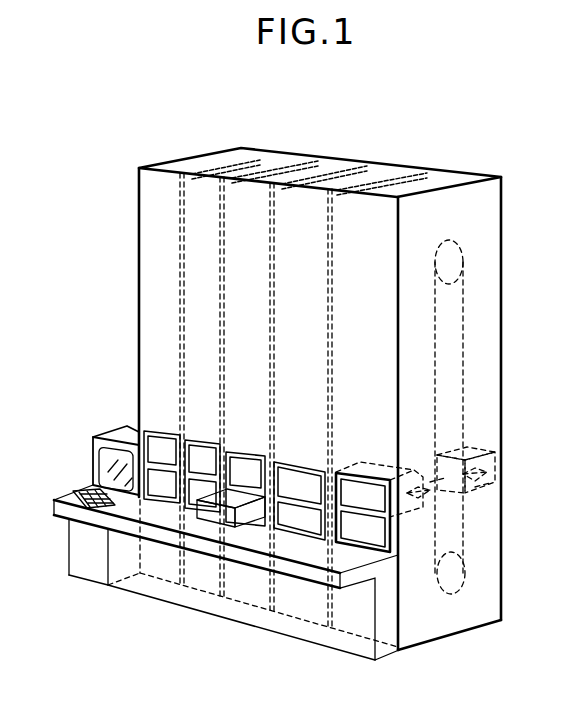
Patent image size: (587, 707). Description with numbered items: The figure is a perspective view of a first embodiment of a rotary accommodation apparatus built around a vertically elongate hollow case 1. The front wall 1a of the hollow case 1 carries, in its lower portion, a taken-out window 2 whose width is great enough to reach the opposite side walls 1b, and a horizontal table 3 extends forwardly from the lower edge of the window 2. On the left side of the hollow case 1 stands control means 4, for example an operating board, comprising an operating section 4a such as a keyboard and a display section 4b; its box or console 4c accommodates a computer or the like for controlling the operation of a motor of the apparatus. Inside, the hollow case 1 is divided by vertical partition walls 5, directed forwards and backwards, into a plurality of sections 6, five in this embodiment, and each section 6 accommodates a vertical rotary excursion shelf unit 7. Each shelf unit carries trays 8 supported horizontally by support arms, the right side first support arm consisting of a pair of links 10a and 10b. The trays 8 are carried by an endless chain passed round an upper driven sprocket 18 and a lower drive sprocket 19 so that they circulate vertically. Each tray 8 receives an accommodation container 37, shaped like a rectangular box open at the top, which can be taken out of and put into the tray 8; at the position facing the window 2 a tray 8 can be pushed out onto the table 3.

The hollow case 1 is at (490, 228).
The front wall 1a is at (145, 198).
The side walls 1b is at (139, 313).
The taken-out window 2 is at (380, 480).
The horizontal table 3 is at (317, 558).
The control means 4 is at (108, 430).
The operating section 4a is at (77, 495).
The display section 4b is at (100, 458).
The box or console 4c is at (75, 563).
The vertical partition walls 5 is at (188, 303).
The sections 6 is at (278, 164).
The vertical rotary excursion shelf unit 7 is at (262, 440).
The tray 8 is at (477, 487).
The link 10a is at (430, 480).
The link 10b is at (493, 460).
The upper driven sprocket 18 is at (461, 257).
The lower drive sprocket 19 is at (457, 583).
The accommodation container 37 is at (202, 460).